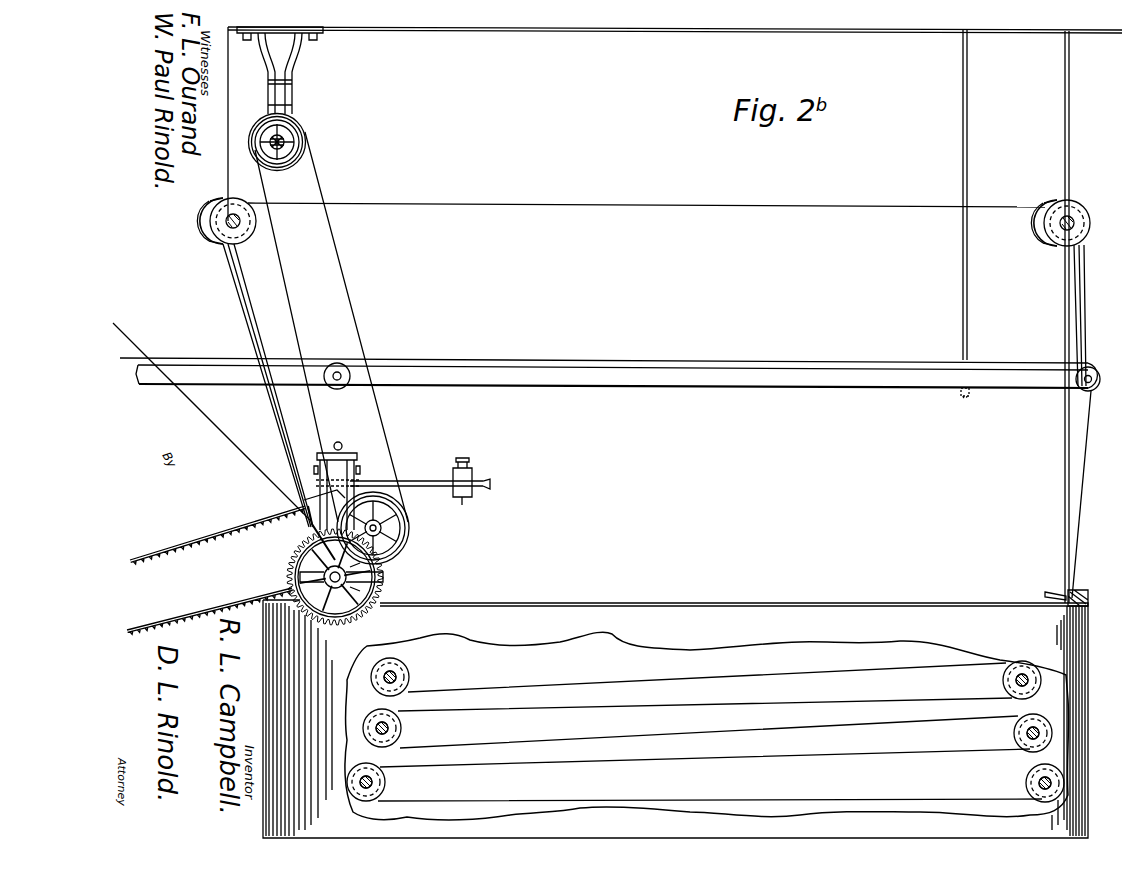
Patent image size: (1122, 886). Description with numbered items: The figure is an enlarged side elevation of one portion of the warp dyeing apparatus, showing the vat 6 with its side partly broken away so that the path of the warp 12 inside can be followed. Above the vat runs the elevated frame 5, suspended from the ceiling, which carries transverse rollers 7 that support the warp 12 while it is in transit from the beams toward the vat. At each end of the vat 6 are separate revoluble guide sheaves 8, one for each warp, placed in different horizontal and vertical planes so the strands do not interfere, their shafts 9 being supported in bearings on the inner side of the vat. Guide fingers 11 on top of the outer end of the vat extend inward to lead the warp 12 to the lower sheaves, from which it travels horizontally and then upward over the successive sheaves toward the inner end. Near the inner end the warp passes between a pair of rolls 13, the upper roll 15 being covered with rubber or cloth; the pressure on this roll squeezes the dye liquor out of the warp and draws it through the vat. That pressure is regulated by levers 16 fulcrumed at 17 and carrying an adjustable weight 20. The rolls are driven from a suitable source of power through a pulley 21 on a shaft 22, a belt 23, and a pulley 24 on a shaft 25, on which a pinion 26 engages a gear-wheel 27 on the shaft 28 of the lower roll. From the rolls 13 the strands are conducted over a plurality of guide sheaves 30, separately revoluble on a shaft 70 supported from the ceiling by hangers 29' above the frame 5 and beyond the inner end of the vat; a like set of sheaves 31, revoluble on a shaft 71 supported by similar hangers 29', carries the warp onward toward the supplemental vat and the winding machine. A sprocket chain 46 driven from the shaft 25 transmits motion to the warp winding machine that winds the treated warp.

The elevated frame 5 is at (585, 387).
The vat 6 is at (1080, 740).
The transverse rollers 7 is at (337, 390).
The guide sheaves 8 is at (405, 678).
The shafts 9 is at (393, 674).
The guide fingers 11 is at (1050, 594).
The warp 12 is at (624, 206).
The rolls 13 is at (308, 565).
The upper roll 15 is at (318, 522).
The levers 16 is at (420, 480).
The fulcrum 17 is at (318, 480).
The weight 20 is at (467, 494).
The pulley 21 is at (250, 144).
The shaft 22 is at (284, 141).
The belt 23 is at (324, 205).
The pulley 24 is at (409, 532).
The shaft 25 is at (381, 519).
The pinion 26 is at (392, 546).
The gear-wheel 27 is at (384, 583).
The shaft of the lower roll 28 is at (360, 595).
The hangers 29' is at (675, 315).
The guide sheaves 30 is at (210, 232).
The guide sheaves 31 is at (1048, 205).
The sprocket chain 46 is at (238, 530).
The shaft 70 is at (240, 236).
The shaft 71 is at (1062, 236).